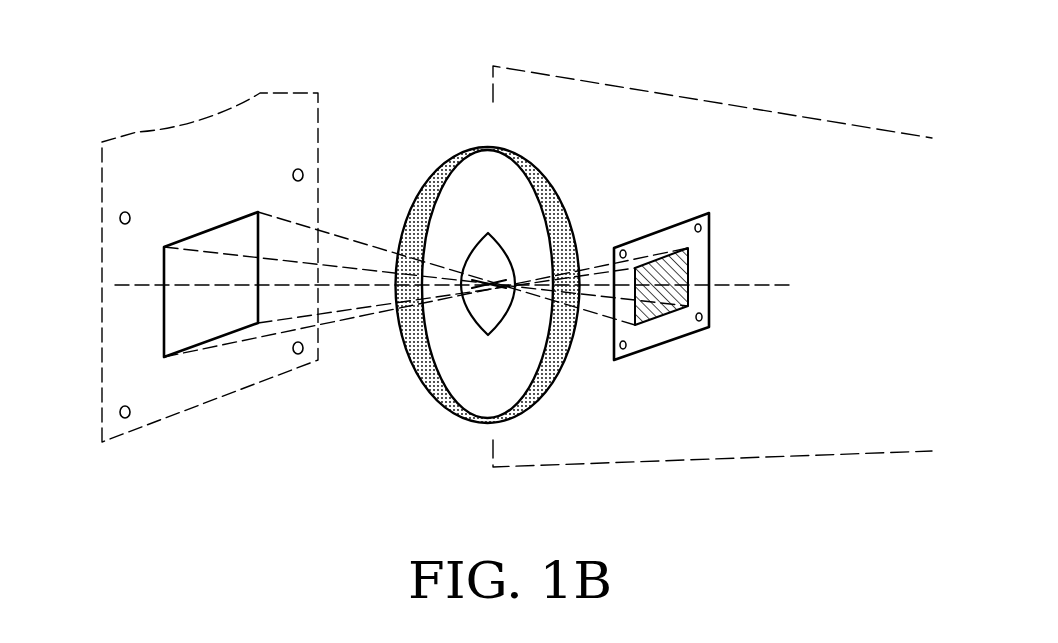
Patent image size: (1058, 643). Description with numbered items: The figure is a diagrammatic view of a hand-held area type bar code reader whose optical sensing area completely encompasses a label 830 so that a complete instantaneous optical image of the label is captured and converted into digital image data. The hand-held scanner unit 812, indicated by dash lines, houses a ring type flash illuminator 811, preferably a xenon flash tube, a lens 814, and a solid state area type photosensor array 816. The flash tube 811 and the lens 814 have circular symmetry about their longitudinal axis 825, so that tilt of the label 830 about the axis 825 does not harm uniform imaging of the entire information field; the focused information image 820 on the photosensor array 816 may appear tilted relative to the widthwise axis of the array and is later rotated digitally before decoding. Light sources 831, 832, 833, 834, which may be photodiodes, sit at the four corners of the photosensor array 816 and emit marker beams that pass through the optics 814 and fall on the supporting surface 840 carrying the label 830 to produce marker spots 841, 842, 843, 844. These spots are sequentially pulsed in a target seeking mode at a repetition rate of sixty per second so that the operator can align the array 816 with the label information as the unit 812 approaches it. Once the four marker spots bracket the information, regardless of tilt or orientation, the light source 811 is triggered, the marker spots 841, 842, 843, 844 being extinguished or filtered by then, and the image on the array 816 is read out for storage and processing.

The ring type flash illuminator 811 is at (407, 358).
The hand-held scanner unit 812 is at (653, 462).
The lens 814 is at (470, 256).
The solid state area type photosensor array 816 is at (712, 216).
The focused information image 820 is at (690, 264).
The longitudinal axis 825 is at (123, 286).
The label 830 is at (162, 343).
The light source 831 is at (613, 250).
The light source 832 is at (696, 227).
The light source 833 is at (626, 352).
The light source 834 is at (705, 316).
The supporting surface 840 is at (145, 430).
The marker spot 841 is at (125, 212).
The marker spot 842 is at (293, 172).
The marker spot 843 is at (128, 418).
The marker spot 844 is at (298, 355).